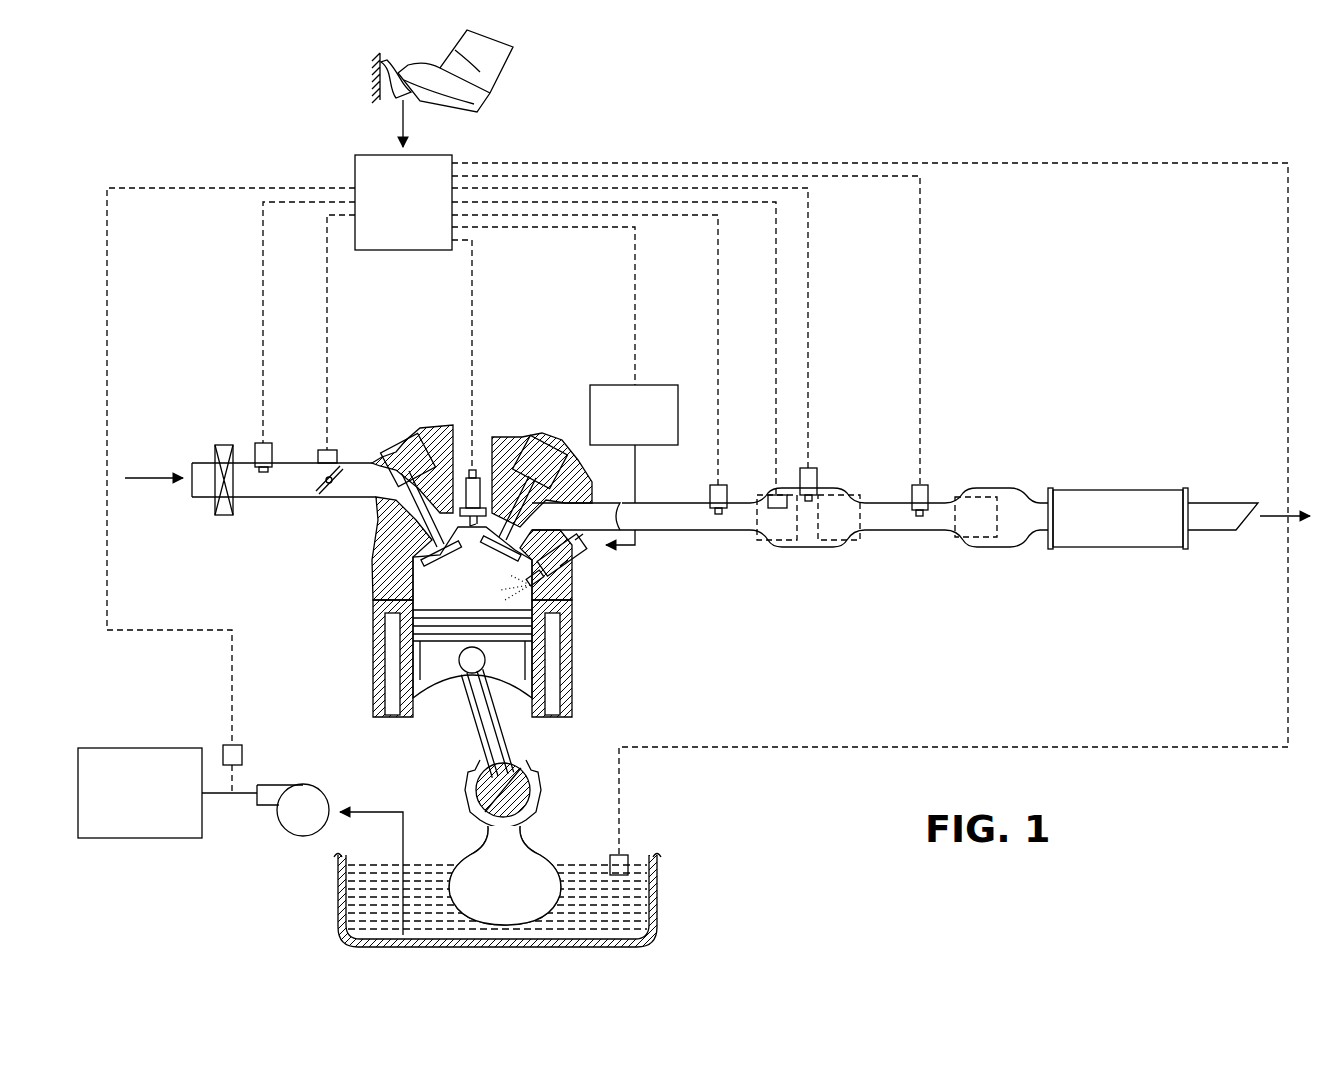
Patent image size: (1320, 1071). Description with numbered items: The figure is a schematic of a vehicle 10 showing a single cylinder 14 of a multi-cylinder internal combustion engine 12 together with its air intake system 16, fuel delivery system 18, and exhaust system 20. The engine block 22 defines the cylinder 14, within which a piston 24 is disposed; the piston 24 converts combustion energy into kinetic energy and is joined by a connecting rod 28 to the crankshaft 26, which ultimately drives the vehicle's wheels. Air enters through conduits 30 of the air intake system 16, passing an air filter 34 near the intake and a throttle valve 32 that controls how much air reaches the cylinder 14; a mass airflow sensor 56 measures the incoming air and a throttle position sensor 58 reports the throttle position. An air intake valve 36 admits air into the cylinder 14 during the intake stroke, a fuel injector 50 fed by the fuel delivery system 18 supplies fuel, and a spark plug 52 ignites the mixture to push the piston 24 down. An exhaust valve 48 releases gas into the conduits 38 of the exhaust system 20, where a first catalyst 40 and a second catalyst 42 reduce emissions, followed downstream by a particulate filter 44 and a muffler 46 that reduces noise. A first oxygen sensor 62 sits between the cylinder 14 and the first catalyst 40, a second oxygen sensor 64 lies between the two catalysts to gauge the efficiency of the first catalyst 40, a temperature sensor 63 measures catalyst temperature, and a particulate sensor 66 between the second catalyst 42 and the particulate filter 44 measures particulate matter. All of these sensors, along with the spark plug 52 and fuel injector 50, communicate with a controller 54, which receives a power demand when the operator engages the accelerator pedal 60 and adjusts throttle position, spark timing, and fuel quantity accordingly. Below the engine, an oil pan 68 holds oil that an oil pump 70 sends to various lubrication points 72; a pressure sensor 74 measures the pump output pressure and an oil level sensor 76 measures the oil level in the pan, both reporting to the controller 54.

The vehicle 10 is at (188, 95).
The internal combustion engine 12 is at (590, 648).
The cylinder 14 is at (474, 594).
The air intake system 16 is at (355, 398).
The fuel delivery system 18 is at (600, 385).
The exhaust system 20 is at (972, 440).
The engine block 22 is at (568, 670).
The piston 24 is at (440, 692).
The crankshaft 26 is at (508, 793).
The connecting rod 28 is at (465, 790).
The conduits 30 is at (250, 508).
The throttle valve 32 is at (328, 490).
The air filter 34 is at (225, 445).
The air intake valve 36 is at (428, 522).
The conduits 38 is at (910, 552).
The first catalyst 40 is at (760, 548).
The second catalyst 42 is at (835, 548).
The particulate filter 44 is at (973, 538).
The muffler 46 is at (1088, 490).
The exhaust valve 48 is at (512, 458).
The fuel injector 50 is at (580, 562).
The spark plug 52 is at (463, 476).
The controller 54 is at (375, 155).
The mass airflow sensor 56 is at (262, 443).
The throttle position sensor 58 is at (325, 450).
The accelerator pedal 60 is at (395, 100).
The first oxygen sensor 62 is at (710, 492).
The temperature sensor 63 is at (770, 496).
The second oxygen sensor 64 is at (817, 480).
The particulate sensor 66 is at (912, 490).
The oil pan 68 is at (600, 935).
The oil pump 70 is at (270, 785).
The lubrication points 72 is at (155, 748).
The pressure sensor 74 is at (225, 745).
The oil level sensor 76 is at (625, 853).